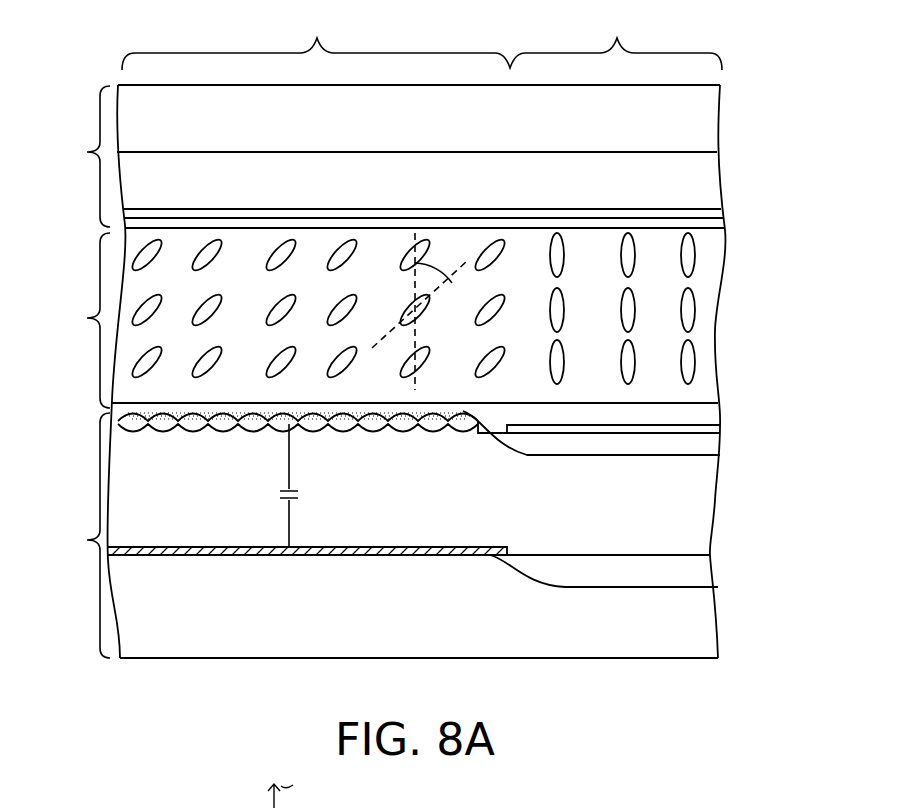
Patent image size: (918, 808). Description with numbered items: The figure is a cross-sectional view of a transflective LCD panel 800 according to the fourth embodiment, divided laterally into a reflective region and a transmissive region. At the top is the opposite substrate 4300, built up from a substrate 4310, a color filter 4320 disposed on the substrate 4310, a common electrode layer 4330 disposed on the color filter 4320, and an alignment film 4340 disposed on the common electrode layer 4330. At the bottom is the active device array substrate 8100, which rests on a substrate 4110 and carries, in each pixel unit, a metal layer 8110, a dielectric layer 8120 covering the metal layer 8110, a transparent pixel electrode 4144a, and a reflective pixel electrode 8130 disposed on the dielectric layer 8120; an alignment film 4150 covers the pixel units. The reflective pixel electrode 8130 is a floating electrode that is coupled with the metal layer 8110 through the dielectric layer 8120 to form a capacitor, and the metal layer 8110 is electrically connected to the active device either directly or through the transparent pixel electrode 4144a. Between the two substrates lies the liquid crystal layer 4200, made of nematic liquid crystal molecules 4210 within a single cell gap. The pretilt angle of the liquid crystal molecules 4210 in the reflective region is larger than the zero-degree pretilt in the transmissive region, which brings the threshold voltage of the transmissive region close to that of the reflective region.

The transflective LCD panel 800 is at (425, 358).
The opposite substrate 4300 is at (424, 167).
The substrate 4310 is at (692, 124).
The color filter 4320 is at (692, 183).
The common electrode layer 4330 is at (710, 213).
The alignment film 4340 is at (710, 226).
The liquid crystal layer 4200 is at (419, 320).
The liquid crystal molecules 4210 is at (688, 315).
The active device array substrate 8100 is at (425, 517).
The alignment film 4150 is at (700, 412).
The transparent pixel electrode 4144a is at (702, 430).
The reflective pixel electrode 8130 is at (720, 457).
The dielectric layer 8120 is at (687, 522).
The metal layer 8110 is at (700, 587).
The substrate 4110 is at (688, 637).